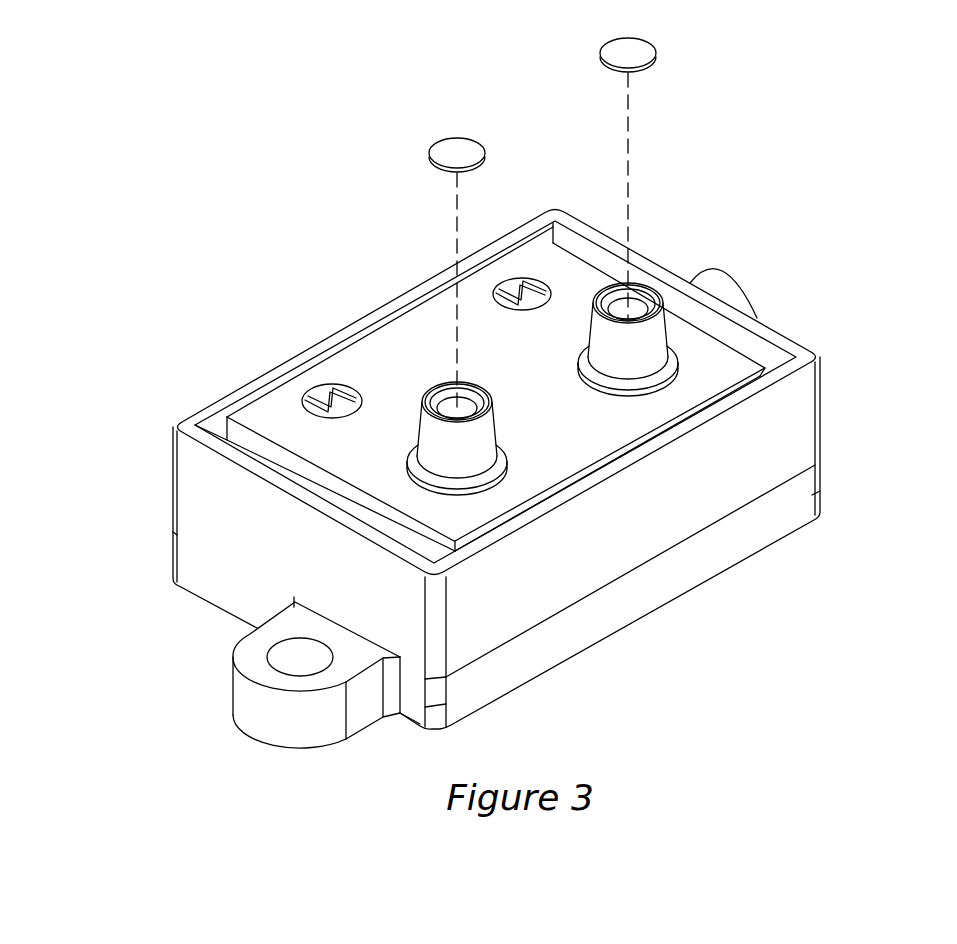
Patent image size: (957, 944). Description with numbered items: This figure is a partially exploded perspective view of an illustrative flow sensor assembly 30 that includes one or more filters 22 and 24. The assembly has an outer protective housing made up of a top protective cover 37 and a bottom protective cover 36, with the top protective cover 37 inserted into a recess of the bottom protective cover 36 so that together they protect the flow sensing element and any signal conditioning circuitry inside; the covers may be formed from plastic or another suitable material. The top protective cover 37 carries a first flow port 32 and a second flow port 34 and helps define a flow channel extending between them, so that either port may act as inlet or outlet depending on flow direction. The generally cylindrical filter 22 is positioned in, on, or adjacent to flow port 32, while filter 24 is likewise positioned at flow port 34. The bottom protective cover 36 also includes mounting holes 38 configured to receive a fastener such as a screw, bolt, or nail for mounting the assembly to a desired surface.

The filter 22 is at (470, 152).
The filter 24 is at (642, 52).
The flow sensor assembly 30 is at (830, 168).
The first flow port 32 is at (427, 435).
The second flow port 34 is at (650, 340).
The bottom protective cover 36 is at (195, 483).
The top protective cover 37 is at (280, 405).
The mounting hole 38 is at (287, 657).